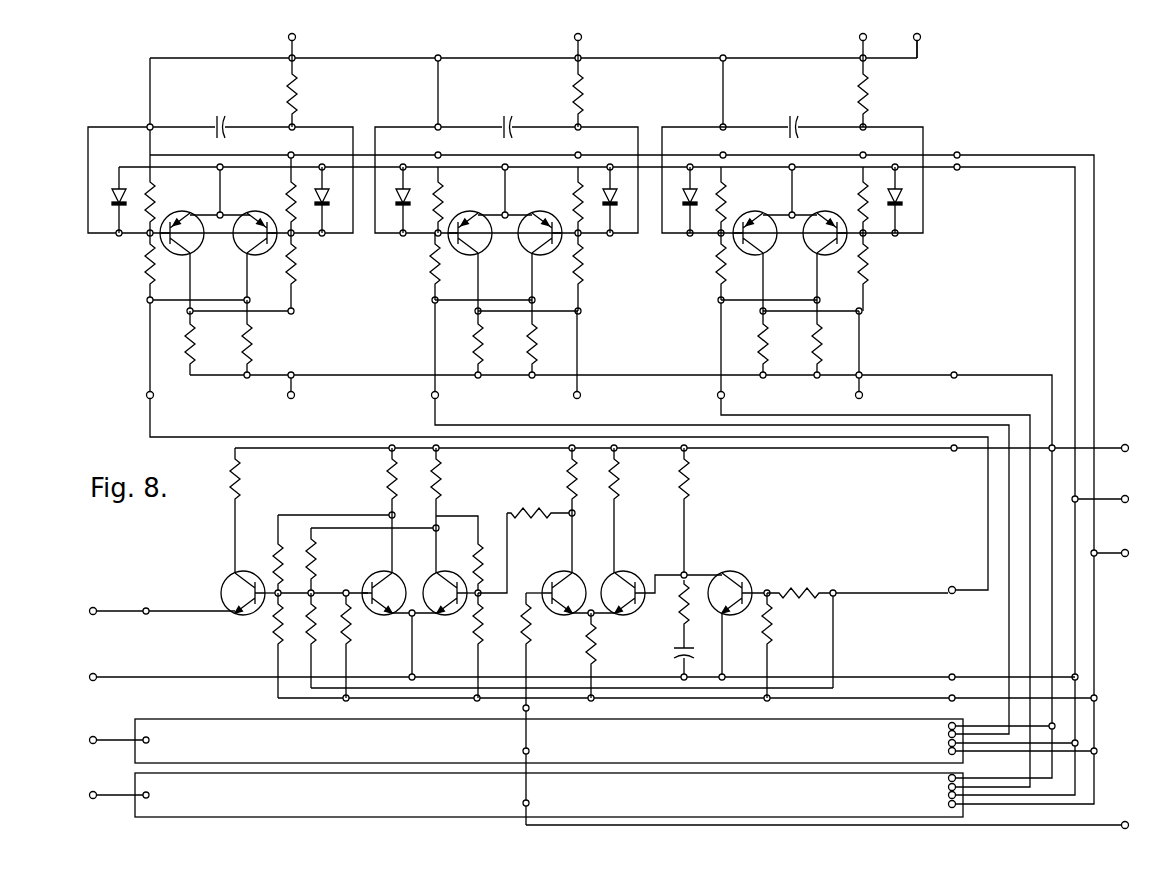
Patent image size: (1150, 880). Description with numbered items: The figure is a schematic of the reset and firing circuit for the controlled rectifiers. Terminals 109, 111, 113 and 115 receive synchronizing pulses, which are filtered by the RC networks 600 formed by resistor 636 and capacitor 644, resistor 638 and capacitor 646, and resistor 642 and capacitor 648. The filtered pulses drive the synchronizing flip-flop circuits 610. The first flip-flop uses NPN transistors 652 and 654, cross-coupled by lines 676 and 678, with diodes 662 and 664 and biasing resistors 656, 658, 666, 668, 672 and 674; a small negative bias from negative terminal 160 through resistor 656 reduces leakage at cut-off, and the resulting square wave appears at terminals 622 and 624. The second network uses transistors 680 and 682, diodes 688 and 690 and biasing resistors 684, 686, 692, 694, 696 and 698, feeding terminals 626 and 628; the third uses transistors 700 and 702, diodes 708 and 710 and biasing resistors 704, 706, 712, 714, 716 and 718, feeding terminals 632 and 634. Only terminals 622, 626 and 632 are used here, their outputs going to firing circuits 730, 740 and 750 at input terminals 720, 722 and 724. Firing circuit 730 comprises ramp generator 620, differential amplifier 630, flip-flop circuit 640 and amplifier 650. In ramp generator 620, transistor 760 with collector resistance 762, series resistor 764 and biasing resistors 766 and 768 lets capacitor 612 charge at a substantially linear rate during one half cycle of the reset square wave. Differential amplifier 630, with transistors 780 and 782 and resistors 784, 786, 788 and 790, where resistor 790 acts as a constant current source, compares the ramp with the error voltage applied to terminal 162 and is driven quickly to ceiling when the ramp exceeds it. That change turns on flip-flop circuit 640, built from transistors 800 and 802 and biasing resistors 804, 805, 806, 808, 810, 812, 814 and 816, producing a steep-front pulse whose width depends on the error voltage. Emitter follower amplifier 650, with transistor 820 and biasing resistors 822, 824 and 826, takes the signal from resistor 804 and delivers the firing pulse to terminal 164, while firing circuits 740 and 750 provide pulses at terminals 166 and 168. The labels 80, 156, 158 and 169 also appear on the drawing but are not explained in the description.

The circuit 80 is at (144, 543).
The terminal 109 is at (296, 38).
The terminal 111 is at (581, 38).
The terminal 113 is at (860, 36).
The terminal 115 is at (920, 38).
The terminal 156 is at (1127, 444).
The terminal 158 is at (1127, 496).
The negative terminal 160 is at (1127, 550).
The terminal 162 is at (1127, 819).
The terminal 164 is at (109, 600).
The terminal 166 is at (109, 729).
The terminal 168 is at (109, 784).
The ground line 169 is at (109, 666).
The RC filtering circuit 600 is at (941, 108).
The synchronous square wave generator circuit 610 is at (996, 278).
The capacitor 612 is at (673, 654).
The ramp generator circuit 620 is at (749, 543).
The output terminal 622 is at (146, 396).
The output terminal 624 is at (294, 398).
The output terminal 626 is at (438, 398).
The output terminal 628 is at (580, 398).
The differential amplifier circuit 630 is at (609, 543).
The output terminal 632 is at (724, 398).
The output terminal 634 is at (862, 398).
The resistor 636 is at (297, 95).
The resistor 638 is at (585, 95).
The flip-flop circuit 640 is at (430, 558).
The resistor 642 is at (869, 86).
The capacitor 644 is at (223, 119).
The capacitor 646 is at (510, 117).
The capacitor 648 is at (796, 117).
The amplifier 650 is at (209, 543).
The transistor 652 is at (176, 220).
The transistor 654 is at (269, 218).
The biasing resistor 656 is at (153, 190).
The biasing resistor 658 is at (289, 186).
The semiconductor diode 662 is at (116, 202).
The semiconductor diode 664 is at (320, 219).
The biasing resistor 666 is at (147, 266).
The biasing resistor 668 is at (291, 276).
The biasing resistor 672 is at (186, 372).
The biasing resistor 674 is at (255, 342).
The line 676 is at (244, 300).
The line 678 is at (285, 311).
The transistor 680 is at (454, 222).
The transistor 682 is at (552, 220).
The biasing resistor 684 is at (441, 195).
The biasing resistor 686 is at (576, 194).
The semiconductor diode 688 is at (395, 220).
The semiconductor diode 690 is at (618, 196).
The biasing resistor 692 is at (434, 264).
The biasing resistor 694 is at (580, 280).
The biasing resistor 696 is at (470, 352).
The biasing resistor 698 is at (540, 344).
The transistor 700 is at (743, 222).
The transistor 702 is at (845, 220).
The biasing resistor 704 is at (728, 195).
The biasing resistor 706 is at (861, 194).
The semiconductor diode 708 is at (696, 197).
The semiconductor diode 710 is at (903, 196).
The biasing resistor 712 is at (720, 266).
The biasing resistor 714 is at (865, 280).
The biasing resistor 716 is at (760, 352).
The biasing resistor 718 is at (824, 344).
The input terminal 720 is at (932, 588).
The terminal 722 is at (948, 742).
The terminal 724 is at (948, 792).
The firing circuit 730 is at (901, 548).
The firing circuit 740 is at (801, 750).
The firing circuit 750 is at (801, 800).
The transistor 760 is at (766, 570).
The collector resistance 762 is at (690, 484).
The resistor 764 is at (679, 616).
The biasing resistor 766 is at (784, 590).
The biasing resistor 768 is at (775, 632).
The transistor 780 is at (562, 574).
The transistor 782 is at (654, 574).
The resistor 784 is at (567, 483).
The resistor 786 is at (620, 484).
The resistor 788 is at (532, 632).
The resistor 790 is at (598, 632).
The transistor 800 is at (371, 581).
The transistor 802 is at (442, 572).
The biasing resistor 804 is at (384, 482).
The biasing resistor 805 is at (555, 511).
The biasing resistor 806 is at (440, 485).
The biasing resistor 808 is at (346, 634).
The biasing resistor 810 is at (476, 636).
The biasing resistor 812 is at (306, 552).
The biasing resistor 814 is at (316, 649).
The biasing resistor 816 is at (481, 540).
The transistor 820 is at (224, 605).
The biasing resistor 822 is at (240, 498).
The biasing resistor 824 is at (278, 540).
The biasing resistor 826 is at (274, 632).